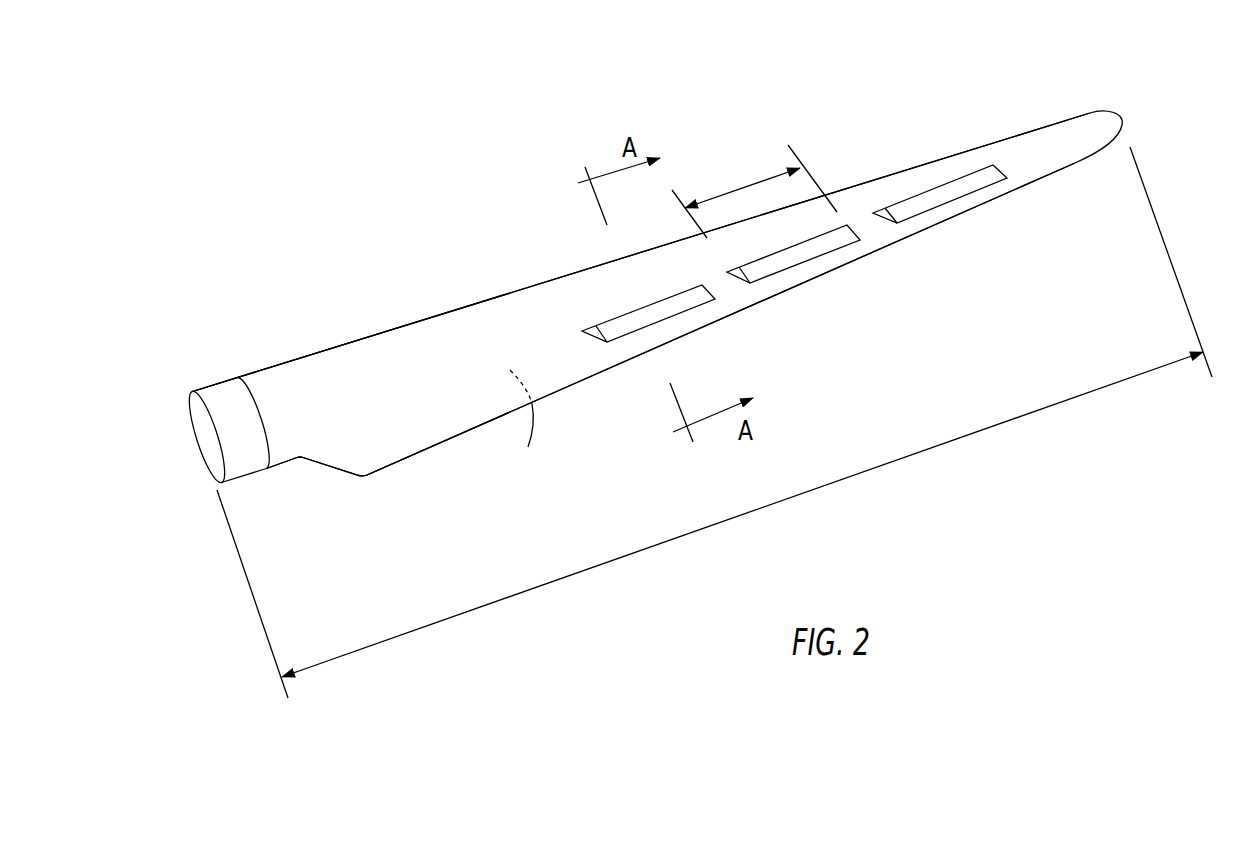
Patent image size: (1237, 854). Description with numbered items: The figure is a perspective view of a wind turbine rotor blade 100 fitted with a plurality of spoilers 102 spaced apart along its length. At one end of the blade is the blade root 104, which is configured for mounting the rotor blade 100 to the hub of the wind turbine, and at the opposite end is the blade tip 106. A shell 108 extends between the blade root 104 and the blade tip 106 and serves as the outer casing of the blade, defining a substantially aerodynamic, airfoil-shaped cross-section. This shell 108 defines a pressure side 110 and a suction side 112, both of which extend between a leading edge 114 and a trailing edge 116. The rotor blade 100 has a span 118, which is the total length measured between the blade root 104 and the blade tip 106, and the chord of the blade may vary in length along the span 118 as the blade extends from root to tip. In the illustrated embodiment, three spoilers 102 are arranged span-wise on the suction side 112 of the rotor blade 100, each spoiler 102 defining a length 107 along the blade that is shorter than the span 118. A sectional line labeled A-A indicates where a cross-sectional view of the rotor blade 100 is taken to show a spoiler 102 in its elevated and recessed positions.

The rotor blade 100 is at (437, 198).
The spoiler 102 is at (670, 318).
The blade root 104 is at (220, 383).
The blade tip 106 is at (1123, 122).
The length 107 is at (752, 180).
The shell 108 is at (435, 412).
The pressure side 110 is at (515, 425).
The suction side 112 is at (377, 382).
The leading edge 114 is at (468, 303).
The trailing edge 116 is at (610, 370).
The span 118 is at (885, 464).